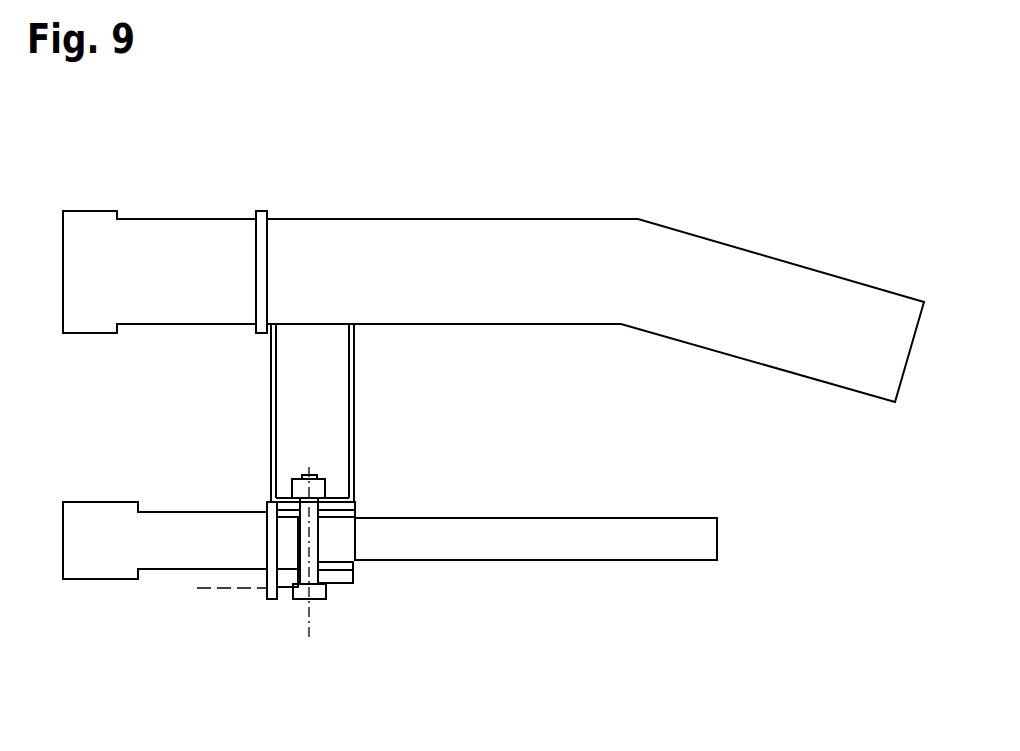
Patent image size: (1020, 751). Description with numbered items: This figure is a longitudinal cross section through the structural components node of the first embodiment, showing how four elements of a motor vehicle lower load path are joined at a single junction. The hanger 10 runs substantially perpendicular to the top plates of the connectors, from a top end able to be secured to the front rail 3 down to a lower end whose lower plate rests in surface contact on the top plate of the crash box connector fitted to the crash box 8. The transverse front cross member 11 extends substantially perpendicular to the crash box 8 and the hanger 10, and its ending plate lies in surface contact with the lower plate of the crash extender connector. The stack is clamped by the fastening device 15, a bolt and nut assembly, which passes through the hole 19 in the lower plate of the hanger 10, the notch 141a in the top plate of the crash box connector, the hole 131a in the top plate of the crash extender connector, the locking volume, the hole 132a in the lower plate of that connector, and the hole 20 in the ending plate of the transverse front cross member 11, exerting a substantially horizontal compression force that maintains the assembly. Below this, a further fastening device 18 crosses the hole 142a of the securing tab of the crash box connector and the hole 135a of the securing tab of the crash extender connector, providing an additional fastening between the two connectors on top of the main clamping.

The front rail 3 is at (524, 214).
The crash box 8 is at (168, 500).
The hanger 10 is at (364, 406).
The transverse front cross member 11 is at (364, 587).
The fastening device 15 is at (303, 537).
The fastening device 18 is at (244, 591).
The holes 19 is at (325, 497).
The holes 20 is at (330, 584).
The hollowing-out 131a is at (322, 518).
The hollowing-out 132a is at (322, 567).
The hollowing-out 135a is at (288, 598).
The hollowing-out 141a is at (290, 503).
The hollowing-out 142a is at (268, 594).